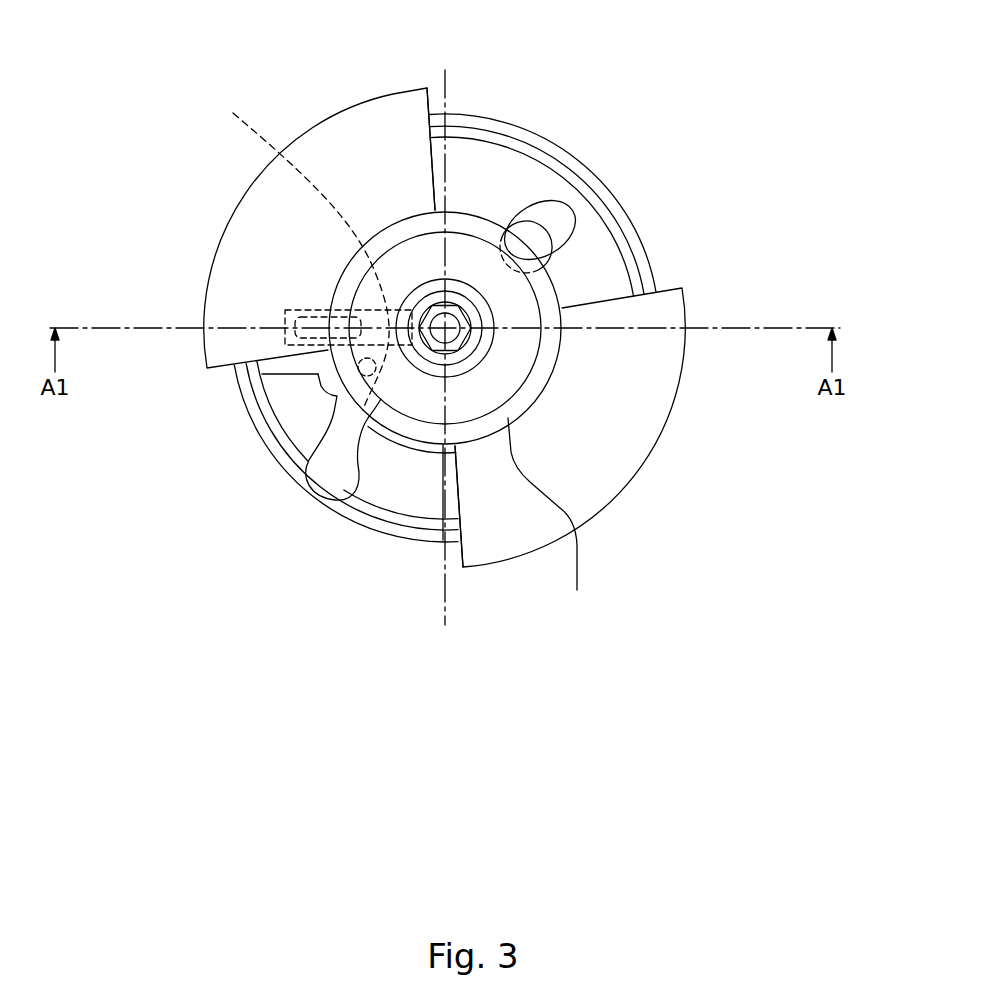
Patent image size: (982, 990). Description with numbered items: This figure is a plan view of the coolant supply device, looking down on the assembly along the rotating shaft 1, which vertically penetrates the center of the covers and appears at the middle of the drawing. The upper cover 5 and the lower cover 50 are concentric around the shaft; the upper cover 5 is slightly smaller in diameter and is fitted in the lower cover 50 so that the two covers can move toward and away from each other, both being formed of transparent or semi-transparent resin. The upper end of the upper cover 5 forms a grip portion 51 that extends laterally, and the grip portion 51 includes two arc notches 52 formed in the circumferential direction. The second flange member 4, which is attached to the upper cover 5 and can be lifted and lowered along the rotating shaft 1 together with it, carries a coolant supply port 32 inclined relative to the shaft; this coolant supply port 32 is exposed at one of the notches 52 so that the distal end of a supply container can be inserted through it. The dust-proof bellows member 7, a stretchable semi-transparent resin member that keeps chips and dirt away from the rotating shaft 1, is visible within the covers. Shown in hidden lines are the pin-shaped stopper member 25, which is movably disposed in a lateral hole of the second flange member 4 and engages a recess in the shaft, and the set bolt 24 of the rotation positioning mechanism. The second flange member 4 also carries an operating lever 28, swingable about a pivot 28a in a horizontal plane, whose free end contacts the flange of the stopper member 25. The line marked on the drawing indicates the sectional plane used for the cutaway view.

The rotating shaft 1 is at (422, 295).
The second flange member 4 is at (490, 167).
The upper cover 5 is at (540, 155).
The dust-proof bellows member 7 is at (577, 590).
The set bolt 24 is at (302, 335).
The stopper member 25 is at (295, 246).
The operating lever 28 is at (320, 477).
The pivot 28a is at (356, 372).
The coolant supply port 32 is at (540, 240).
The lower cover 50 is at (612, 197).
The grip portion 51 is at (252, 239).
The arc notches 52 is at (447, 150).